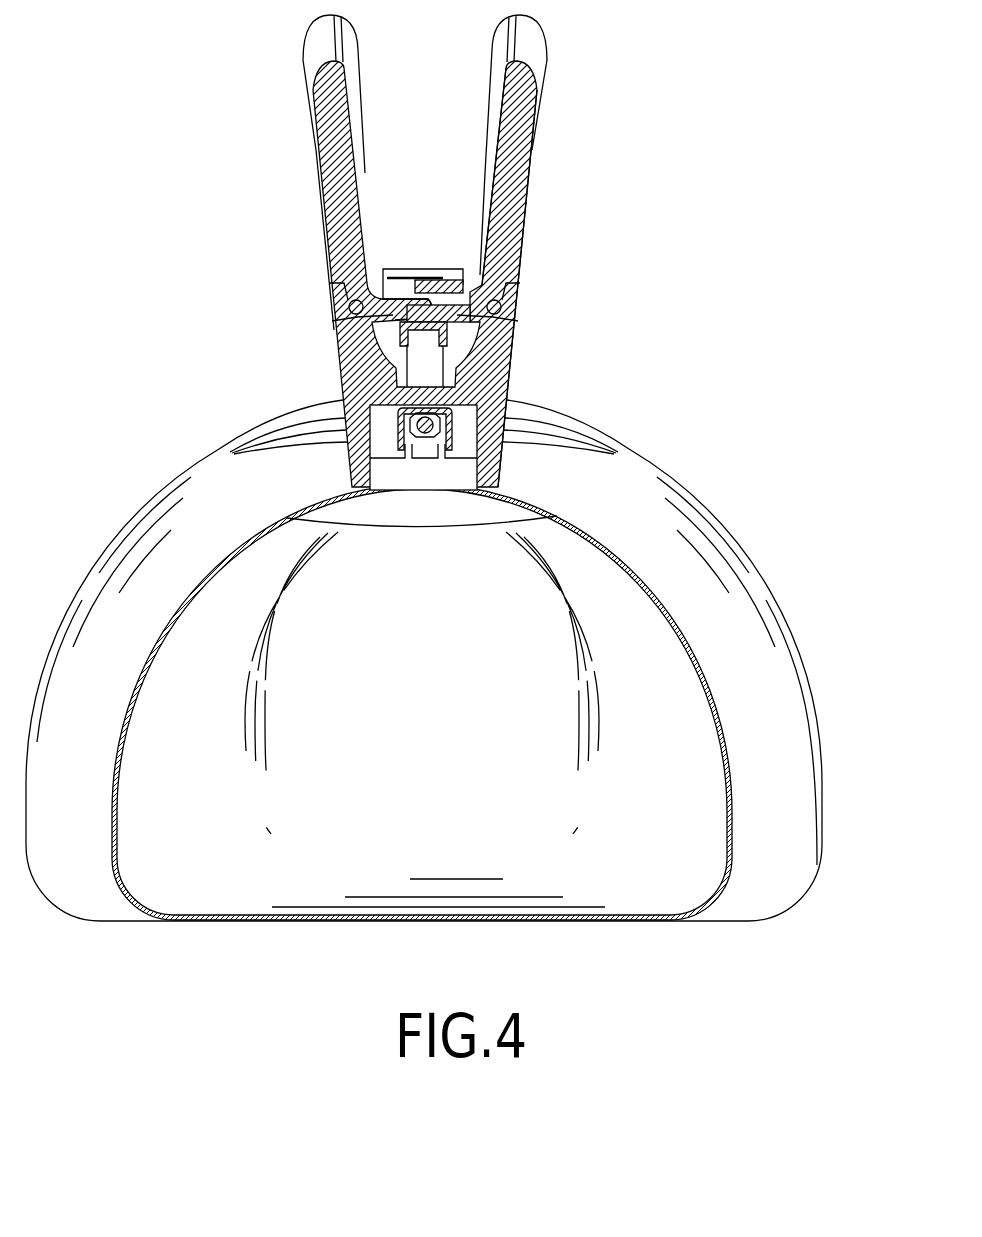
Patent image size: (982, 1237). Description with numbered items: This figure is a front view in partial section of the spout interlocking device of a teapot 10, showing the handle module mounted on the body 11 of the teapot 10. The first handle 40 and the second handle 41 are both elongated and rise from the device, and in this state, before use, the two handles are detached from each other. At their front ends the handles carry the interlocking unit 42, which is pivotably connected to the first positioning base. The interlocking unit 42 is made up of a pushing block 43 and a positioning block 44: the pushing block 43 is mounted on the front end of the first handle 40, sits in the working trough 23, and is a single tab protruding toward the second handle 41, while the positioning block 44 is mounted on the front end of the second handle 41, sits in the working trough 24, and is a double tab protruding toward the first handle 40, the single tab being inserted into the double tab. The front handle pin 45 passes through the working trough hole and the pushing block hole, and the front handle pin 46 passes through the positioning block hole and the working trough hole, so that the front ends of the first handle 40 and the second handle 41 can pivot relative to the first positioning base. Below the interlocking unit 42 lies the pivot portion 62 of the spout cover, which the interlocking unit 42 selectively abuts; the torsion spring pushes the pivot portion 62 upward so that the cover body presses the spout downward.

The teapot 10 is at (435, 516).
The body 11 is at (742, 578).
The working trough 23 is at (332, 321).
The working trough 24 is at (518, 321).
The first handle 40 is at (333, 163).
The second handle 41 is at (510, 167).
The interlocking unit 42 is at (425, 265).
The pushing block 43 is at (428, 298).
The positioning block 44 is at (422, 296).
The front handle pin 45 is at (332, 290).
The front handle pin 46 is at (518, 290).
The pivot portion 62 is at (432, 325).